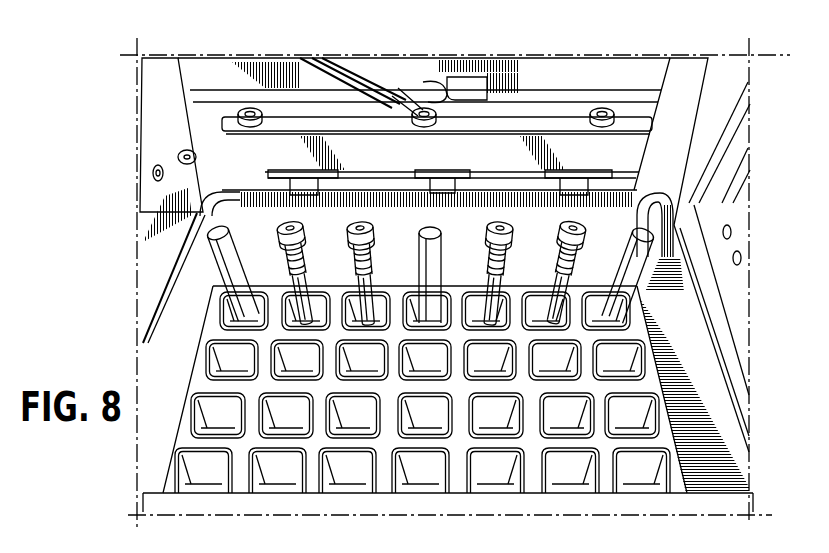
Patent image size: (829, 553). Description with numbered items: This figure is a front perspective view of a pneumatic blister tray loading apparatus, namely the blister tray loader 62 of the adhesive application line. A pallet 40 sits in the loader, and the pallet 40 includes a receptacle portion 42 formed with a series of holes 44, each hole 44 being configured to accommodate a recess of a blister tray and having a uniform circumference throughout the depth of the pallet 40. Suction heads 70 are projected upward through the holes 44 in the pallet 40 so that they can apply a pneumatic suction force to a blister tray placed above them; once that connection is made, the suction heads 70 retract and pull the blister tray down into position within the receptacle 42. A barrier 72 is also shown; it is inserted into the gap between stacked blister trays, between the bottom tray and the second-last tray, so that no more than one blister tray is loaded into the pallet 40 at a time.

The pallet 40 is at (266, 240).
The receptacle portion 42 is at (193, 377).
The hole 44 is at (413, 300).
The blister tray loader 62 is at (488, 152).
The suction head 70 is at (354, 226).
The barrier 72 is at (296, 192).